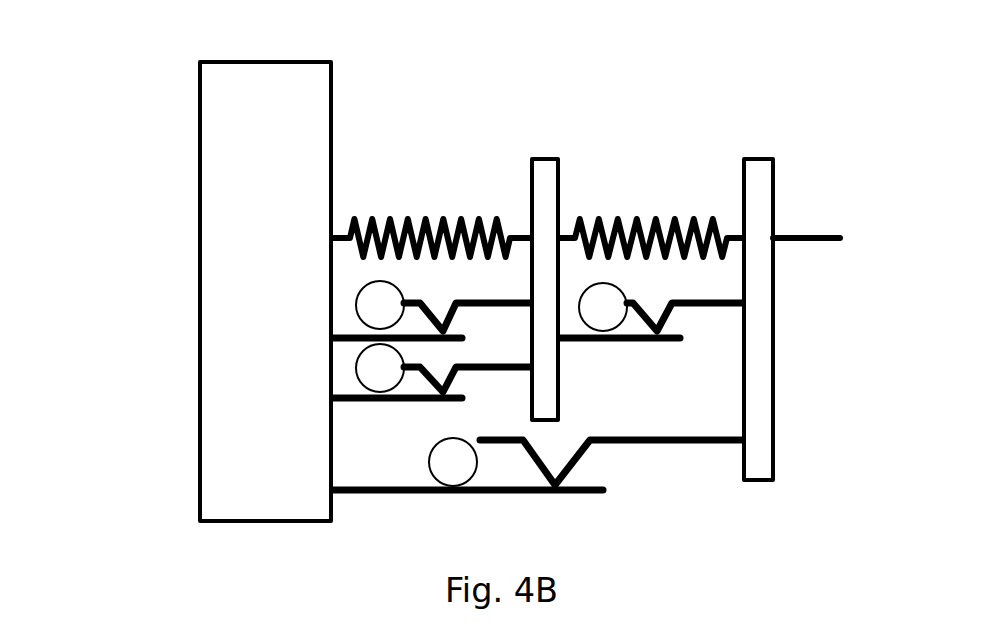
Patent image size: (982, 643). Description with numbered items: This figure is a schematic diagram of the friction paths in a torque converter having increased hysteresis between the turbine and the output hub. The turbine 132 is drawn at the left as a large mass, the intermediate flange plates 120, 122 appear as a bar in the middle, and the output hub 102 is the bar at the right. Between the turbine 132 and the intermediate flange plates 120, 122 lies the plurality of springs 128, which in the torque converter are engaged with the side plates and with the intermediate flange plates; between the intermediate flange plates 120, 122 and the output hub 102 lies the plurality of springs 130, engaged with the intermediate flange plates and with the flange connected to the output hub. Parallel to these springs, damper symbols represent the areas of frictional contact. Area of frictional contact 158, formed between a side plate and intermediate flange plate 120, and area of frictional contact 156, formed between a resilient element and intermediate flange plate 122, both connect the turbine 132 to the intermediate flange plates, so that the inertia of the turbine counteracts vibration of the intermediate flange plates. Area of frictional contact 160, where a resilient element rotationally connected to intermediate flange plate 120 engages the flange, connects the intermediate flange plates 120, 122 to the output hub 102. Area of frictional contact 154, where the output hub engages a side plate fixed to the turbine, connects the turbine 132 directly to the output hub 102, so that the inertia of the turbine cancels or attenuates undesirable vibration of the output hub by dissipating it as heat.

The output hub 102 is at (775, 182).
The intermediate flange plate 120 is at (544, 228).
The intermediate flange plate 122 is at (541, 155).
The plurality of springs 128 is at (422, 220).
The plurality of springs 130 is at (643, 220).
The turbine 132 is at (198, 184).
The area of frictional contact 154 is at (453, 462).
The area of frictional contact 156 is at (380, 368).
The area of frictional contact 158 is at (380, 305).
The area of frictional contact 160 is at (607, 310).